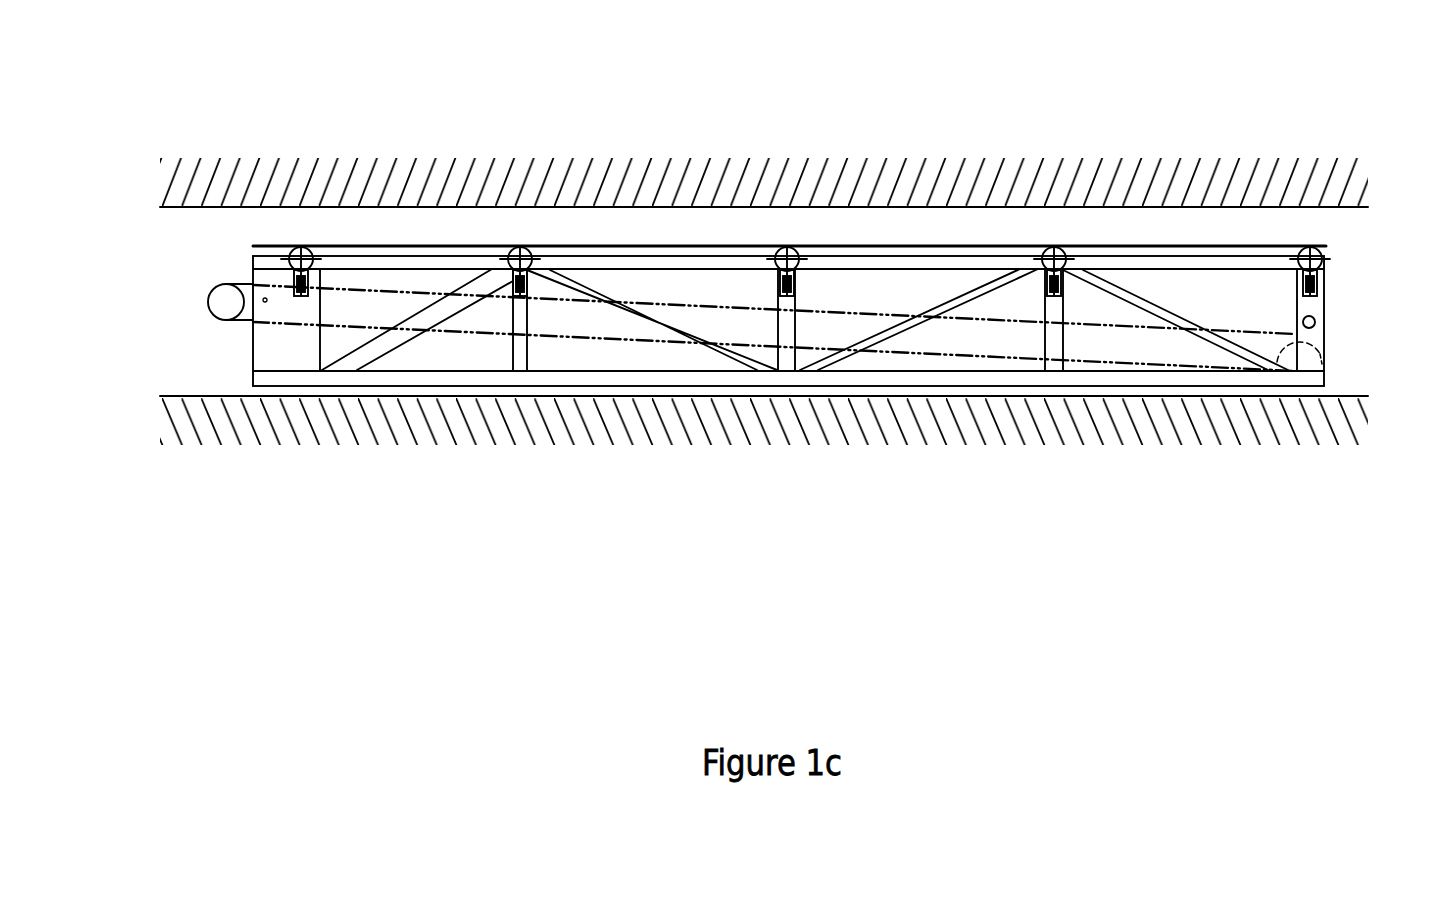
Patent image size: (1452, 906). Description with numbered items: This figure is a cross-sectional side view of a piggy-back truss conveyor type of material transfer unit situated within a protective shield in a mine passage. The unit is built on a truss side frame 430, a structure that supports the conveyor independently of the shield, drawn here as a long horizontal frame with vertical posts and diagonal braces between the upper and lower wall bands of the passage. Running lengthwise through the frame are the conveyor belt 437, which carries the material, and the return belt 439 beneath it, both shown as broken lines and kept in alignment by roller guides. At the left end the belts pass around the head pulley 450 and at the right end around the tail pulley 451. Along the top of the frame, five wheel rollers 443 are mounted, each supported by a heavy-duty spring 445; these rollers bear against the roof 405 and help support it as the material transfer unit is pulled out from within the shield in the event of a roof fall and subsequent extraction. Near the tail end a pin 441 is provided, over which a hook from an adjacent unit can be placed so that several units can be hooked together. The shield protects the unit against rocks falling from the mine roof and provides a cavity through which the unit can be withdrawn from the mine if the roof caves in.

The roof 405 is at (745, 246).
The truss side frame 430 is at (282, 355).
The conveyor belt 437 is at (708, 308).
The return belt 439 is at (943, 360).
The pin 441 is at (1316, 322).
The wheel rollers 443 is at (303, 247).
The heavy-duty springs 445 is at (311, 294).
The head pulley 450 is at (208, 301).
The tail pulley 451 is at (1307, 360).